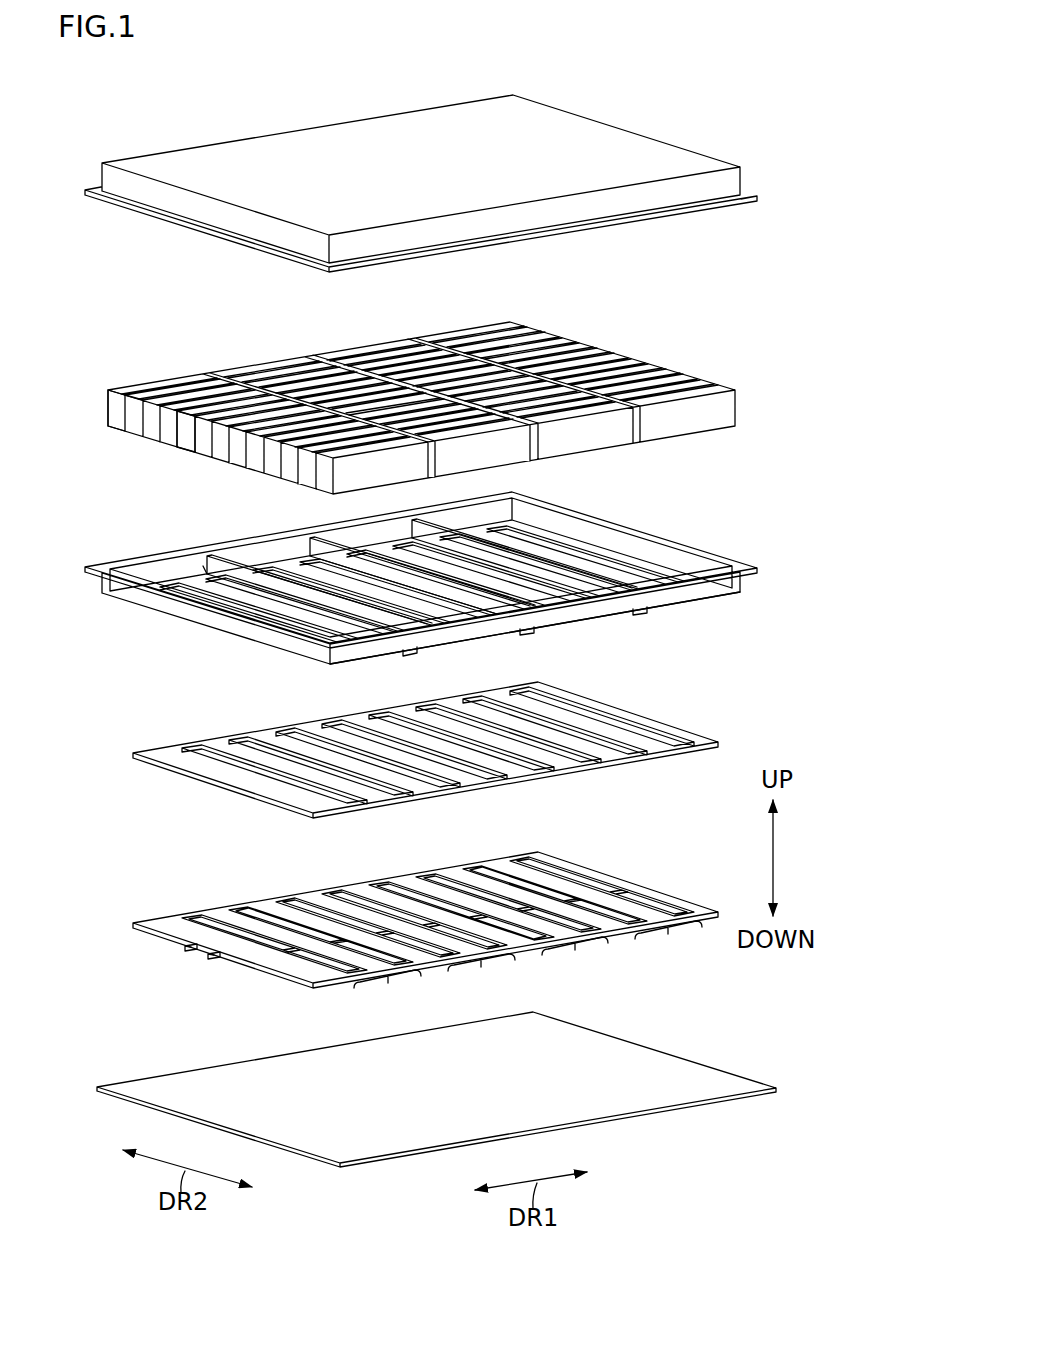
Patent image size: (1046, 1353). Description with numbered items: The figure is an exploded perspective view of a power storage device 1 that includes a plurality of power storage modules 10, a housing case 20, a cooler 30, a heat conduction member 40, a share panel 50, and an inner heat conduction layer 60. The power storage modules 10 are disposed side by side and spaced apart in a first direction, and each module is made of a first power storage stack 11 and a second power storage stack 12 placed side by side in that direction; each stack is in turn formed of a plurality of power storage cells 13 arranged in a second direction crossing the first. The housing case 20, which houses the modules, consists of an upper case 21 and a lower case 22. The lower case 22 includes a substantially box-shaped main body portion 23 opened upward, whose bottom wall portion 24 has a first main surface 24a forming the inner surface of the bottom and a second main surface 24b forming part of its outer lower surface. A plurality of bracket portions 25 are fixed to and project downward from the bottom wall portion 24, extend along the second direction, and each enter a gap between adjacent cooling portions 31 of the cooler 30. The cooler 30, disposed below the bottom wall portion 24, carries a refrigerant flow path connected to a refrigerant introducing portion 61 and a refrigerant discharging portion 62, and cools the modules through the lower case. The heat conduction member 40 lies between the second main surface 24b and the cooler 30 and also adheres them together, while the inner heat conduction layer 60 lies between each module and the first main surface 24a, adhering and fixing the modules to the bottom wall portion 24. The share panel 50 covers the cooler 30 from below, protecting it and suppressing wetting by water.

The power storage device 1 is at (121, 140).
The power storage module 10 is at (95, 321).
The first power storage stack 11 is at (129, 384).
The second power storage stack 12 is at (177, 378).
The power storage cell 13 is at (191, 443).
The housing case 20 is at (799, 128).
The upper case 21 is at (737, 151).
The lower case 22 is at (736, 604).
The main body portion 23 is at (709, 521).
The bottom wall portion 24 is at (688, 607).
The first main surface 24a is at (283, 557).
The second main surface 24b is at (551, 619).
The bracket portion 25 is at (640, 616).
The cooler 30 is at (641, 865).
The cooling portion 31 is at (529, 967).
The heat conduction member 40 is at (674, 715).
The share panel 50 is at (693, 1054).
The inner heat conduction layer 60 is at (196, 570).
The refrigerant introducing portion 61 is at (185, 948).
The refrigerant discharging portion 62 is at (208, 957).